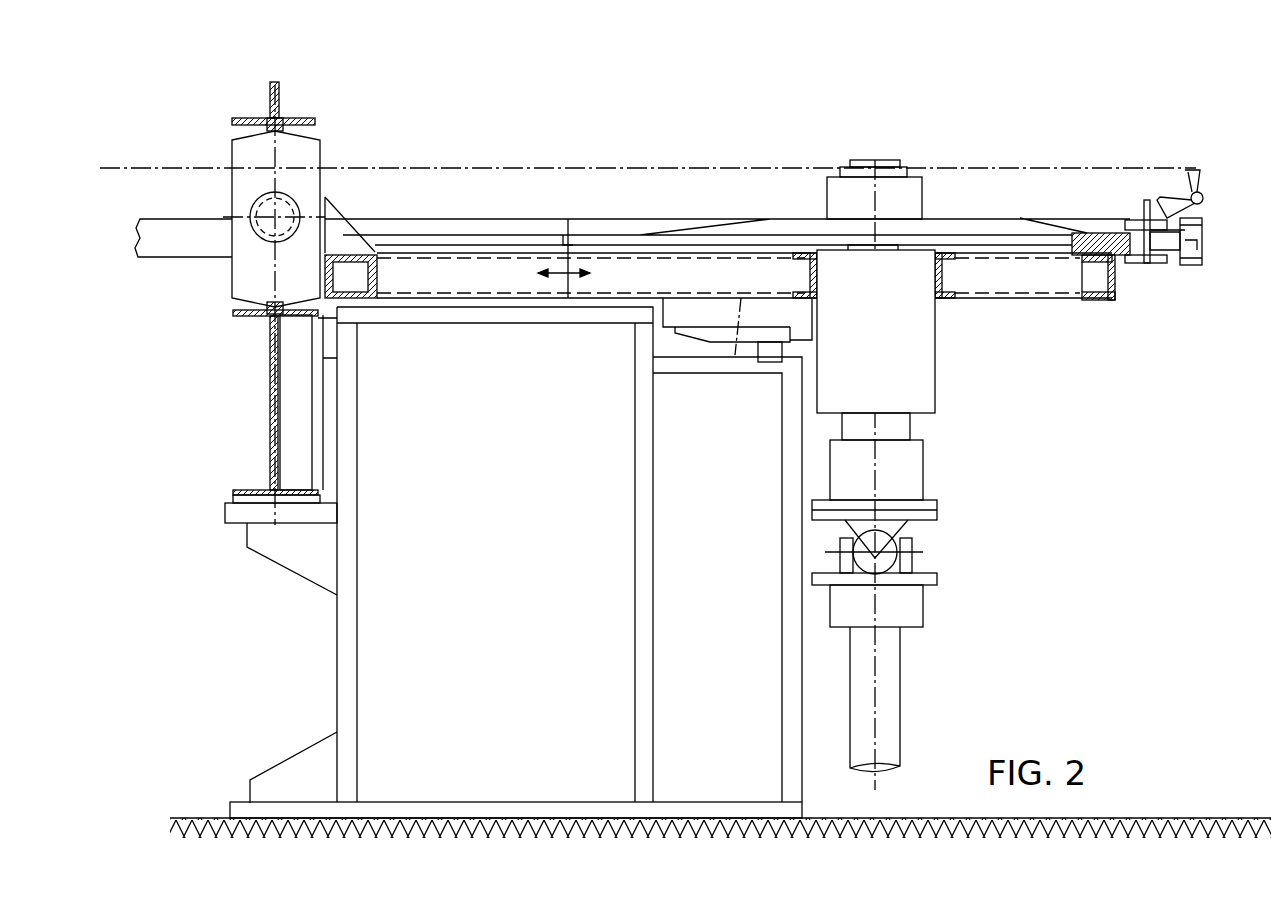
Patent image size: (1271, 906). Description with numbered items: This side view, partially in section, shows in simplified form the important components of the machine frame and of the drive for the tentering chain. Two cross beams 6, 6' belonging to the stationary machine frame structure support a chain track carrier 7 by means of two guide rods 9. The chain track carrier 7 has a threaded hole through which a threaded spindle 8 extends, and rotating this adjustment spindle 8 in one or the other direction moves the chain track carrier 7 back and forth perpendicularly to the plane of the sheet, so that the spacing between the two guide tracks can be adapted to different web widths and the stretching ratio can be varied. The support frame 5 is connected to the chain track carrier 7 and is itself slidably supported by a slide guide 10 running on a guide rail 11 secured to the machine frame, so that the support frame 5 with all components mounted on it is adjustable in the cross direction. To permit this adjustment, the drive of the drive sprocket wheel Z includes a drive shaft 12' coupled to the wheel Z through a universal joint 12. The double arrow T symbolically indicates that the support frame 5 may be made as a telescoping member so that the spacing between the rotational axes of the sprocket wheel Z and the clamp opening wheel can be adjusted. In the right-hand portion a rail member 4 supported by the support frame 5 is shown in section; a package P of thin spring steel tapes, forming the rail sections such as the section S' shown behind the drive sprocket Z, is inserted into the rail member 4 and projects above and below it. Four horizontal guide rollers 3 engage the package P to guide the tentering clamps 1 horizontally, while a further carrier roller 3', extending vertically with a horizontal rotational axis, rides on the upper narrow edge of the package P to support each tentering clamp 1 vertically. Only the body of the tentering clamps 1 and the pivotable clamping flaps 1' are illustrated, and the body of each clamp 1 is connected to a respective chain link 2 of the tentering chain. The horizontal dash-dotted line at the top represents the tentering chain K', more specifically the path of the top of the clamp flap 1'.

The tentering clamp 1 is at (1246, 163).
The clamping flap 1' is at (1195, 188).
The chain link 2 is at (1203, 247).
The horizontal guide roller 3 is at (1152, 235).
The carrier roller 3' is at (1155, 198).
The rail member 4 is at (1082, 300).
The support frame 5 is at (378, 258).
The cross beam 6 is at (275, 405).
The cross beam 6' is at (298, 100).
The chain track carrier 7 is at (245, 258).
The threaded spindle 8 is at (250, 204).
The guide rod 9 is at (270, 121).
The slide guide 10 is at (722, 340).
The guide rail 11 is at (772, 355).
The universal joint 12 is at (930, 393).
The drive shaft 12' is at (905, 699).
The package of spring steel tapes P is at (1148, 262).
The rail section S' is at (556, 216).
The drive sprocket wheel Z is at (773, 240).
The tentering chain K' is at (960, 152).
The double arrow T is at (582, 278).